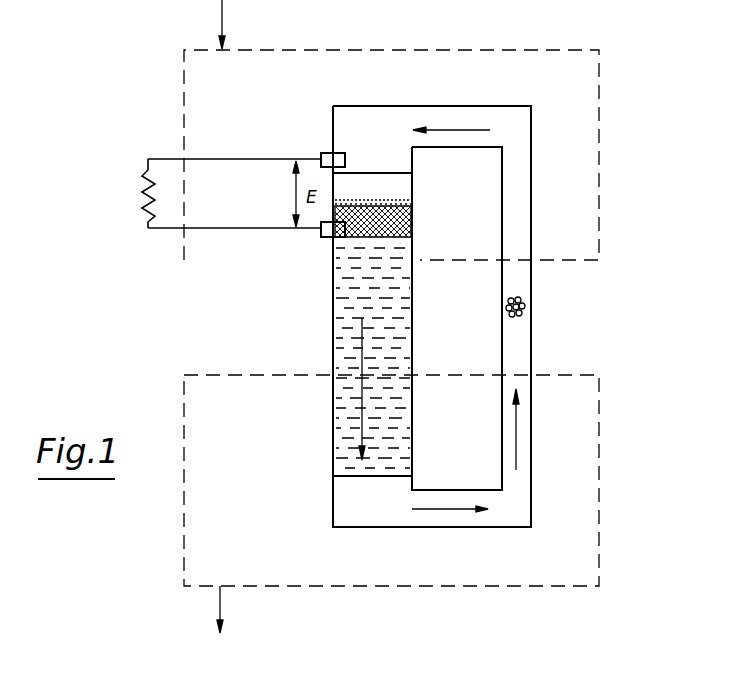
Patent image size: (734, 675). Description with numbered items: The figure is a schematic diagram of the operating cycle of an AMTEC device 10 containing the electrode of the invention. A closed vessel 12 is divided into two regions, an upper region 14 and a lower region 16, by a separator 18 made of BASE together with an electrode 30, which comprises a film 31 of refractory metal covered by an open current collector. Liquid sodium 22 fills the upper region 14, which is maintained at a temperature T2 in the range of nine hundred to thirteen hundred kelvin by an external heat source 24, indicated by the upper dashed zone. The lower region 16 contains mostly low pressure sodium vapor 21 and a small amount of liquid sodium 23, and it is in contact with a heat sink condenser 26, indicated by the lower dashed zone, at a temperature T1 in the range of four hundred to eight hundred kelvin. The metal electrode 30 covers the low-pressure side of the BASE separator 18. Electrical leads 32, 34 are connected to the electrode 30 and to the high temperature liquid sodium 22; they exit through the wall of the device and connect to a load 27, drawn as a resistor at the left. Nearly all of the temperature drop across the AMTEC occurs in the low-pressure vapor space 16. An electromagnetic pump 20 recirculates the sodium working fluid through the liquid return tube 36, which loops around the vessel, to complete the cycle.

The AMTEC device 10 is at (436, 48).
The closed vessel 12 is at (408, 352).
The upper region 14 is at (377, 148).
The lower region 16 is at (372, 308).
The separator 18 is at (390, 189).
The electromagnetic pump 20 is at (525, 308).
The low pressure sodium vapor 21 is at (380, 452).
The liquid sodium 22 is at (342, 118).
The liquid sodium 23 is at (357, 488).
The external heat source 24 is at (600, 132).
The heat sink condenser 26 is at (600, 440).
The load 27 is at (146, 190).
The electrode 30 is at (413, 225).
The film 31 is at (395, 200).
The electrical lead 32 is at (226, 158).
The electrical lead 34 is at (176, 230).
The liquid return tube 36 is at (532, 195).